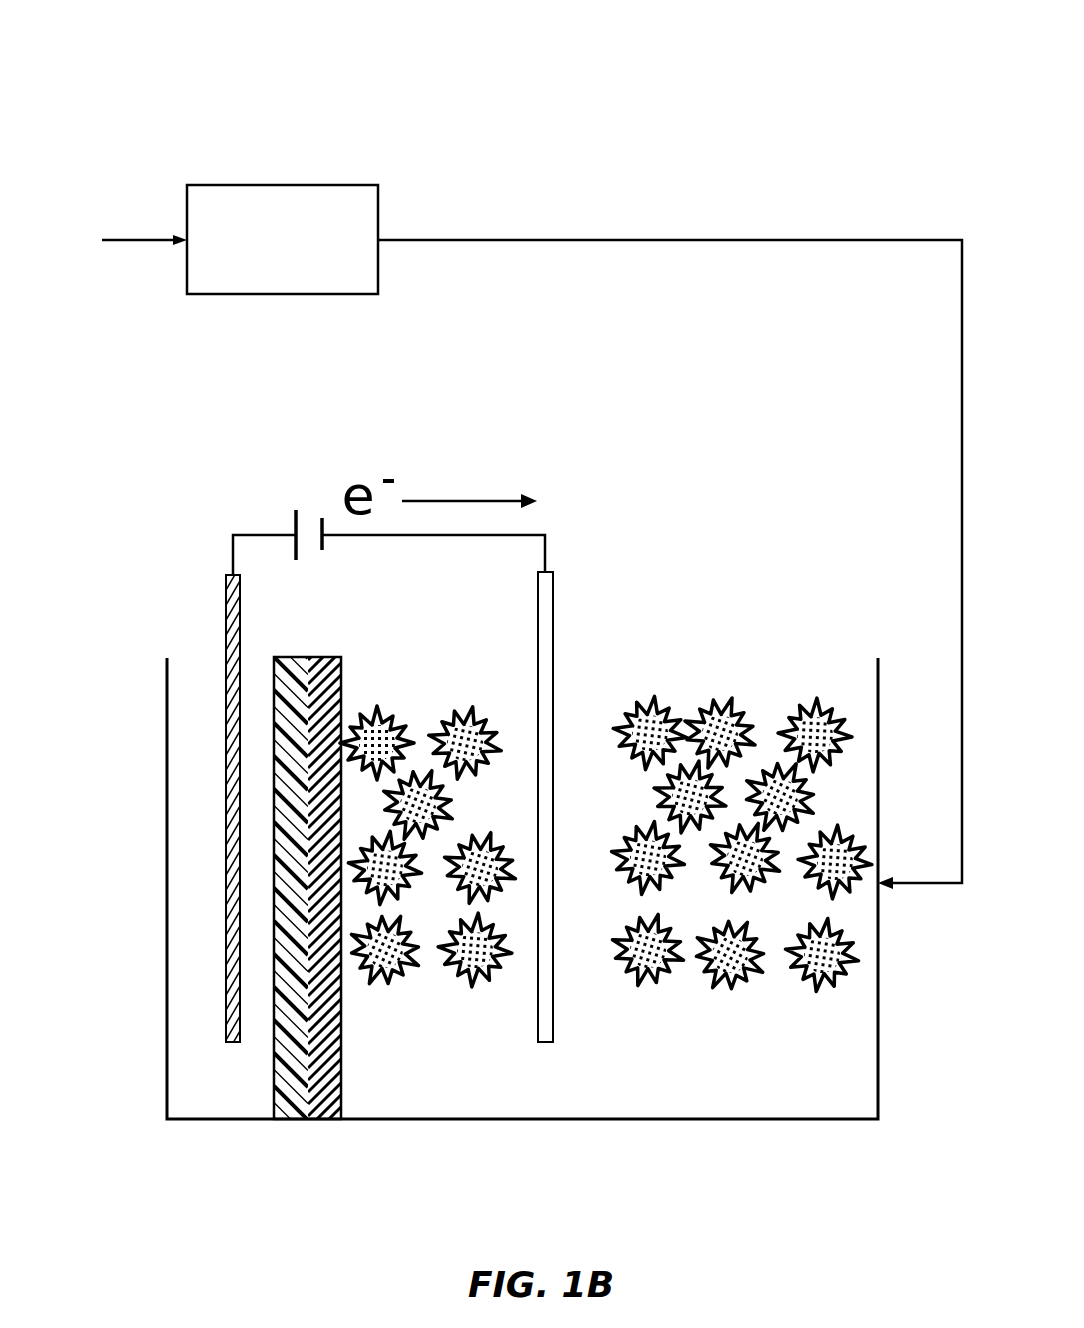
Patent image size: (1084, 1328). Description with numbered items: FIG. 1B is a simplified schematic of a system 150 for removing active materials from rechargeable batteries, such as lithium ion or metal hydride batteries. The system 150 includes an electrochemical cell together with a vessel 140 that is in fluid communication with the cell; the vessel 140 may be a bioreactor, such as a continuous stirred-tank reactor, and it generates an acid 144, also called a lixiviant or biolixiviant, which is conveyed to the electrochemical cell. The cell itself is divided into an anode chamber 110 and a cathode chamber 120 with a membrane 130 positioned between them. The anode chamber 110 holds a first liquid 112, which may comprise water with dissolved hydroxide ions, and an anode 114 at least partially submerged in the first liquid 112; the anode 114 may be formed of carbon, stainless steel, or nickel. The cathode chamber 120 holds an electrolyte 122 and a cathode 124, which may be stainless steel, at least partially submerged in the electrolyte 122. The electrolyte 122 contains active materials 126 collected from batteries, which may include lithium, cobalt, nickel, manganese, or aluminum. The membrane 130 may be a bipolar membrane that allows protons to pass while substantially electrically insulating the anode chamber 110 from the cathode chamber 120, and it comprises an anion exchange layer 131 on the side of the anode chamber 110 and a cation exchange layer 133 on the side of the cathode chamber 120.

The system 150 is at (158, 130).
The vessel 140 is at (302, 252).
The acid 144 is at (670, 239).
The first liquid 112 is at (192, 832).
The anode 114 is at (226, 687).
The cathode 124 is at (553, 618).
The anode chamber 110 is at (164, 1147).
The membrane 130 is at (370, 893).
The anion exchange layer 131 is at (288, 676).
The cation exchange layer 133 is at (342, 683).
The cathode chamber 120 is at (344, 1147).
The electrolyte 122 is at (566, 1085).
The active materials 126 is at (740, 713).